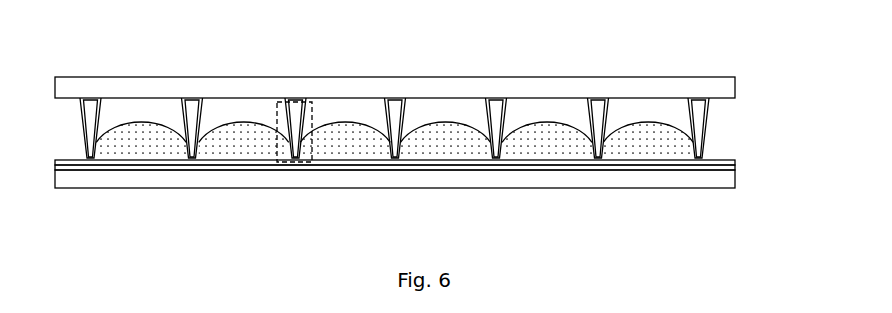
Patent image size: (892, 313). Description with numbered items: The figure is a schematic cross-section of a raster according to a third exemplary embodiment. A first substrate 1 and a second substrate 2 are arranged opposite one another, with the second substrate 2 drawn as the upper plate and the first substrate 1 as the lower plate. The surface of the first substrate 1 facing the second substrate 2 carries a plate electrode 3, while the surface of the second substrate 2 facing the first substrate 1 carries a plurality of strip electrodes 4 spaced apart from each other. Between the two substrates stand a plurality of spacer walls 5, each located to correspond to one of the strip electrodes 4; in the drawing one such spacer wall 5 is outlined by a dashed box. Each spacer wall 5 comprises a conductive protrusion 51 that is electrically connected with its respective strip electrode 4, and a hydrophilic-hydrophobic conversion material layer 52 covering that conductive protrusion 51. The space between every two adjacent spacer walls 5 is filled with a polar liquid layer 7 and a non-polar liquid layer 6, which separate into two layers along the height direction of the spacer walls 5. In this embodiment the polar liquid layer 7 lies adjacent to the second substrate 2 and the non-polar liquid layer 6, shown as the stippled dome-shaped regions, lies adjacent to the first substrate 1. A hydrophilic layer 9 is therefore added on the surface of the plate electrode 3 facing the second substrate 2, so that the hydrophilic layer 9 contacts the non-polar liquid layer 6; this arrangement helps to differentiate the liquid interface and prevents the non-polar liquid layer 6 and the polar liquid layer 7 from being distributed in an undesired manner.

The first substrate 1 is at (735, 188).
The second substrate 2 is at (735, 88).
The plate electrode 3 is at (735, 170).
The strip electrode 4 is at (600, 99).
The spacer wall 5 is at (277, 110).
The non-polar liquid layer 6 is at (168, 140).
The polar liquid layer 7 is at (167, 108).
The hydrophilic layer 9 is at (735, 160).
The conductive protrusion 51 is at (700, 113).
The hydrophilic-hydrophobic conversion material layer 52 is at (707, 140).